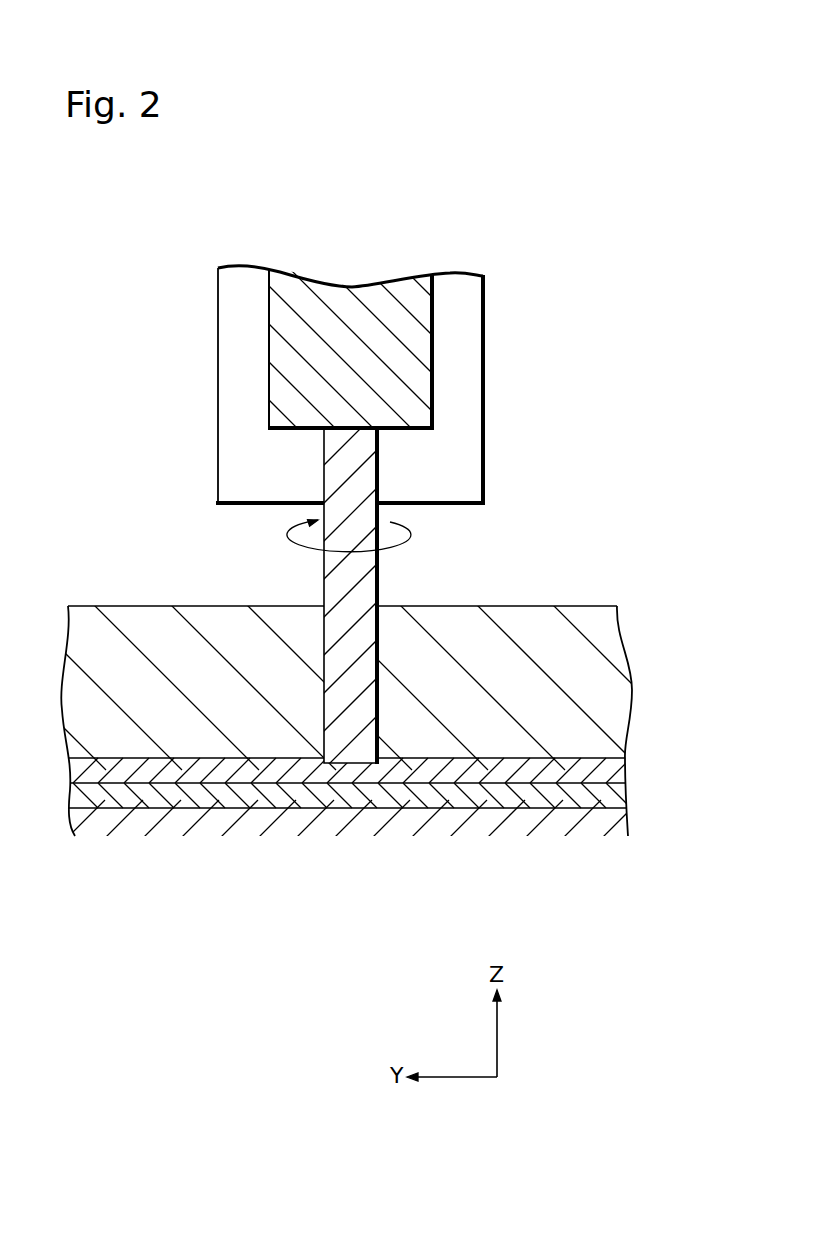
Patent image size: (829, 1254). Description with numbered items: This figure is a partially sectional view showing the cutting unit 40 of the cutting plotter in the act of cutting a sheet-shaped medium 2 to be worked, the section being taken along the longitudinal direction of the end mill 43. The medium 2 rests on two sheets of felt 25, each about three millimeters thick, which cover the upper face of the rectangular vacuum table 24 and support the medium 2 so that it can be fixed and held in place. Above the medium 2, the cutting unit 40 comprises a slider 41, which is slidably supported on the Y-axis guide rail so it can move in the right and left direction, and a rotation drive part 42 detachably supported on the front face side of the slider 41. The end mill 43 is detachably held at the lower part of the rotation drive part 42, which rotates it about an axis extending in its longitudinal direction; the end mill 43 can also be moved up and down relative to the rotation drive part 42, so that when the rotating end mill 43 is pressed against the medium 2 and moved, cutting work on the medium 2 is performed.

The medium to be worked 2 is at (605, 690).
The vacuum table 24 is at (397, 746).
The felt 25 is at (608, 770).
The cutting unit 40 is at (440, 232).
The slider 41 is at (248, 433).
The rotation drive part 42 is at (345, 302).
The end mill 43 is at (343, 471).